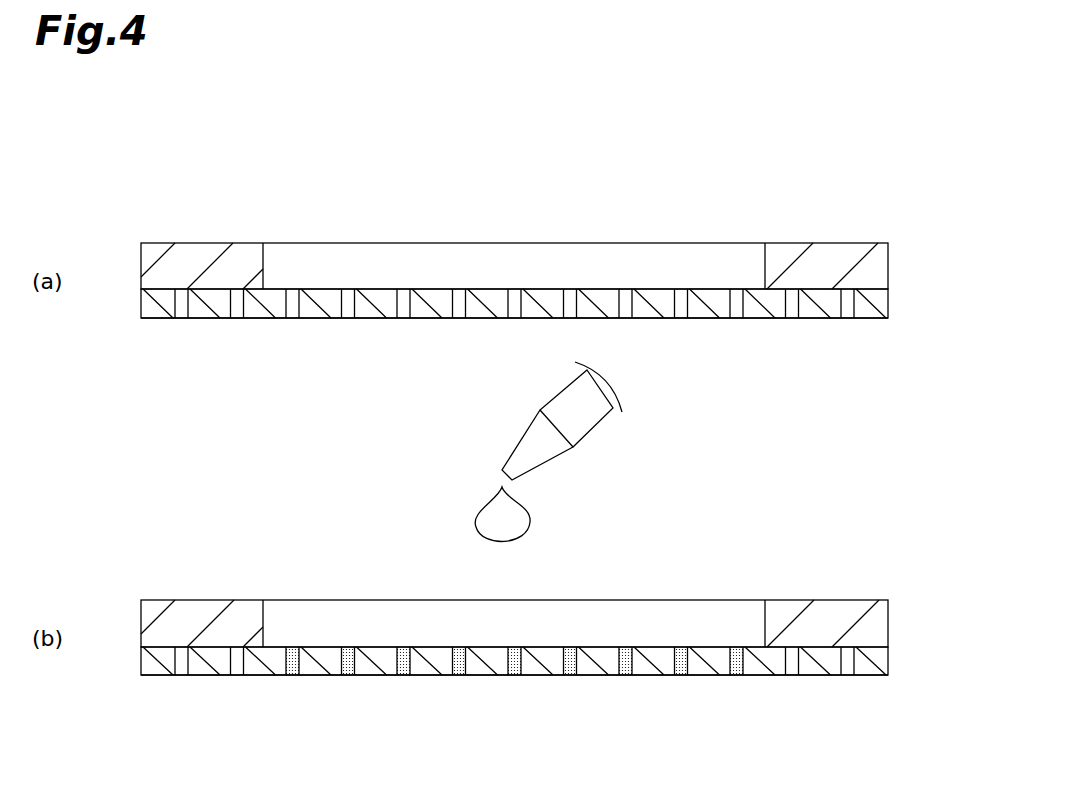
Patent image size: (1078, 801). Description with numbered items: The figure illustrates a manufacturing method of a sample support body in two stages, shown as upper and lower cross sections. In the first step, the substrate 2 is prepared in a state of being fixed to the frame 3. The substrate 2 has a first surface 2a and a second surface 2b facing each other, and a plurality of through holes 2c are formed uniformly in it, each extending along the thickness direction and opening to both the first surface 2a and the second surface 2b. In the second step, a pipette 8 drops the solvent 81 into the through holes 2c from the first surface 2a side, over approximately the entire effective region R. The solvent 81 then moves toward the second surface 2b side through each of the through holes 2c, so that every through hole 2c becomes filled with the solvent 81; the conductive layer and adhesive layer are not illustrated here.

The substrate 2 is at (877, 303).
The first surface 2a is at (880, 280).
The second surface 2b is at (863, 320).
The through holes 2c is at (293, 303).
The frame 3 is at (876, 253).
The pipette 8 is at (527, 437).
The solvent 81 is at (490, 510).
The effective region R is at (590, 284).